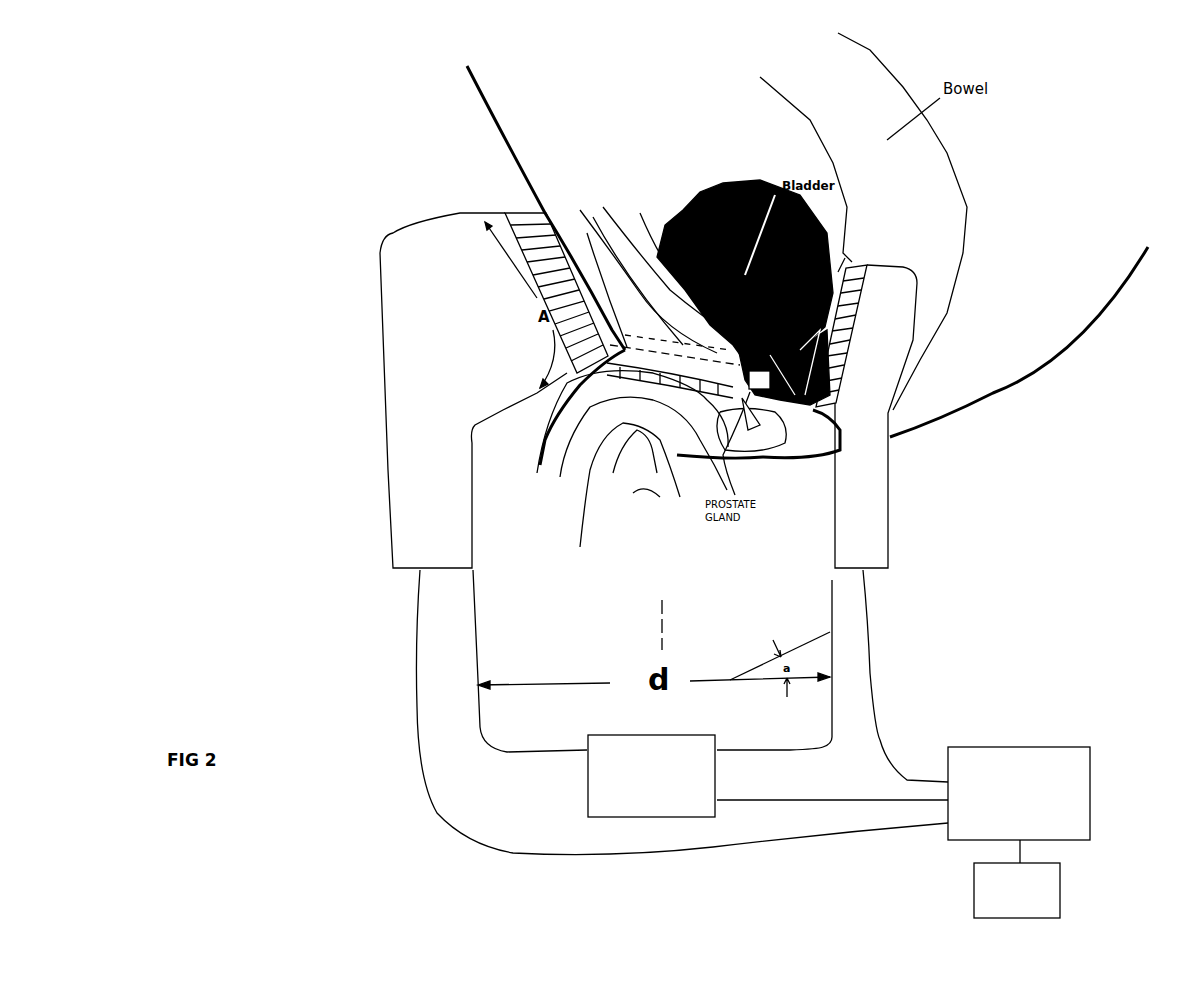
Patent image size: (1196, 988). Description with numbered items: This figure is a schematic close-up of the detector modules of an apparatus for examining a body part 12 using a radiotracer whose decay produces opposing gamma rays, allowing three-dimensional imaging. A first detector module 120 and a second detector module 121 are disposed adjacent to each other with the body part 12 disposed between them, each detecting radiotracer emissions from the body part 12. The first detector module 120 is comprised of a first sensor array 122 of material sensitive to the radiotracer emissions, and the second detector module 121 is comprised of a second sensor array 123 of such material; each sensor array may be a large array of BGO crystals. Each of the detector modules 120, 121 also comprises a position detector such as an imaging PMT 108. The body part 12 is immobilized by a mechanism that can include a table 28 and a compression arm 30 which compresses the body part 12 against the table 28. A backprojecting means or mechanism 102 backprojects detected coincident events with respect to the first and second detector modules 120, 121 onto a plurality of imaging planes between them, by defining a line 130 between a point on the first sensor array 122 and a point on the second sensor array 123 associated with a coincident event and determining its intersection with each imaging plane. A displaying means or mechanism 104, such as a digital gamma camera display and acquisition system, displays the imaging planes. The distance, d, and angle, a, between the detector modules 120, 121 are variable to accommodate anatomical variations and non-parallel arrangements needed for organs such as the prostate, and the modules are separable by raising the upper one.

The body part 12 is at (759, 380).
The table 28 is at (845, 258).
The compression arm 30 is at (547, 213).
The backprojecting means or mechanism 102 is at (1095, 790).
The displaying means or mechanism 104 is at (972, 890).
The imaging PMT 108 is at (456, 328).
The first detector module 120 is at (378, 404).
The second detector module 121 is at (888, 490).
The first sensor array 122 is at (517, 213).
The second sensor array 123 is at (850, 267).
The line 130 is at (630, 735).